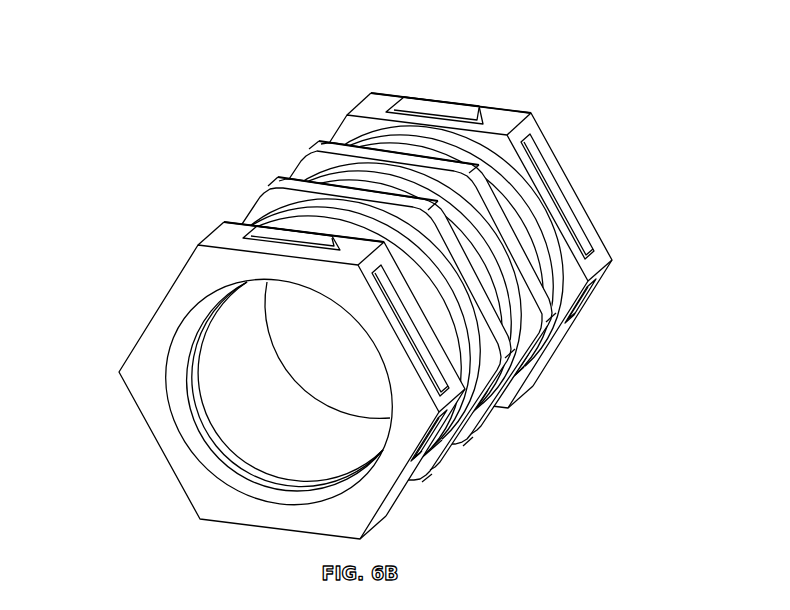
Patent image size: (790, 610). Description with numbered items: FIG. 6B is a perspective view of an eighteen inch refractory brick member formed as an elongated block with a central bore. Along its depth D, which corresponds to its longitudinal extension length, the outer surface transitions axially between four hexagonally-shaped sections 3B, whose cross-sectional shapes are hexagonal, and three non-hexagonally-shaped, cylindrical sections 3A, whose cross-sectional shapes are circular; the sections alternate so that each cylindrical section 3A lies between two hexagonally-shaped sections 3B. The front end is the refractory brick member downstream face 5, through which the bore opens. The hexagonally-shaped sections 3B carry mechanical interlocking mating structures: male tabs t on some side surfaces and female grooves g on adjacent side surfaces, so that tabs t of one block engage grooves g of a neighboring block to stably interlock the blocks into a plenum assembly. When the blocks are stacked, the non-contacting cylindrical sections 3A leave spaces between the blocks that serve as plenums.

The refractory brick member downstream face 5 is at (376, 301).
The hexagonally-shaped section 3B is at (376, 301).
The cylindrical section 3A is at (527, 253).
The tab t is at (467, 110).
The groove g is at (564, 228).
The depth D is at (198, 245).